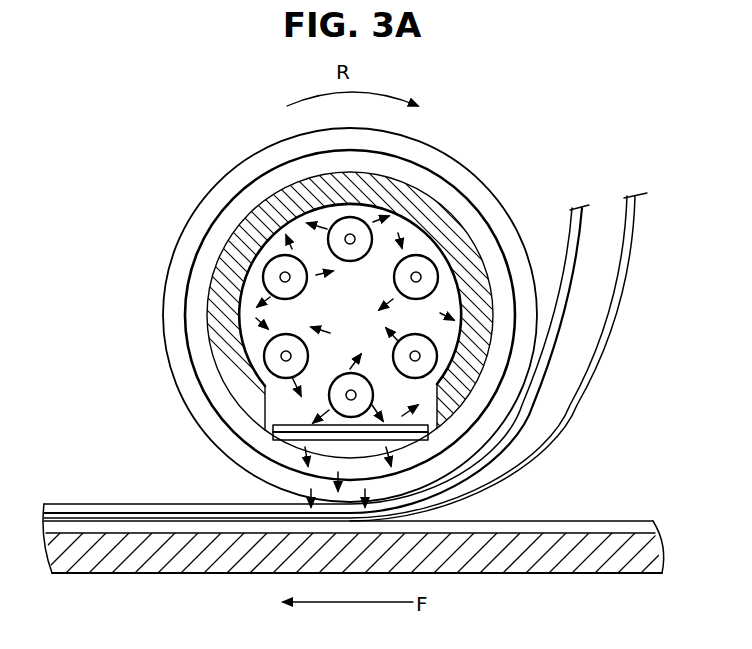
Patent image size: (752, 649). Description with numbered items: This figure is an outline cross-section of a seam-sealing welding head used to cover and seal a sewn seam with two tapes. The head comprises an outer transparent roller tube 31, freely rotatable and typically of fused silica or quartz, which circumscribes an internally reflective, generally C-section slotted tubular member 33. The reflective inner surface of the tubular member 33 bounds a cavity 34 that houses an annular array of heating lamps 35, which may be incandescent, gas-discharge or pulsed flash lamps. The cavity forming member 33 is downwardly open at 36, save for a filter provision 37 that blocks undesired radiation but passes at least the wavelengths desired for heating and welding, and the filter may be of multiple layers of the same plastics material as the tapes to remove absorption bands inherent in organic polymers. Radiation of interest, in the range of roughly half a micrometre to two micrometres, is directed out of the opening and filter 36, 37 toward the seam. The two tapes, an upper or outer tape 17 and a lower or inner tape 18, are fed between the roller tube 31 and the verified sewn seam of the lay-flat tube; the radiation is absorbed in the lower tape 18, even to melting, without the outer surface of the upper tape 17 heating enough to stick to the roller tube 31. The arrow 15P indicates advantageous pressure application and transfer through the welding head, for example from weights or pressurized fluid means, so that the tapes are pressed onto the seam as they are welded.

The outer transparent roller tube 31 is at (263, 159).
The slotted tubular member 33 is at (238, 233).
The cavity 34 is at (437, 250).
The heating lamps 35 is at (366, 226).
The downward opening 36 is at (272, 412).
The filter provision 37 is at (262, 452).
The upper tape 17 is at (562, 323).
The lower tape 18 is at (628, 253).
The pressure application arrow 15P is at (100, 283).